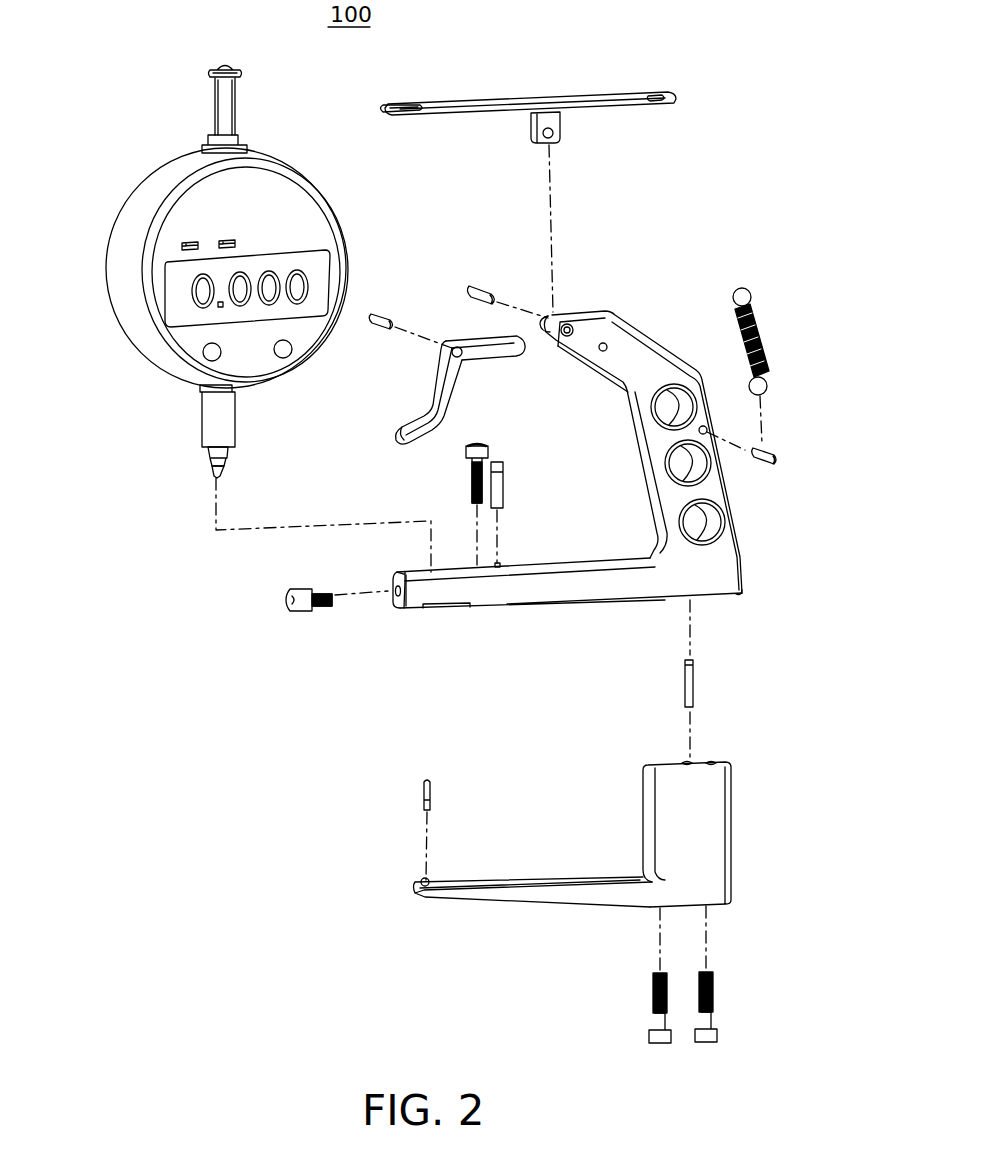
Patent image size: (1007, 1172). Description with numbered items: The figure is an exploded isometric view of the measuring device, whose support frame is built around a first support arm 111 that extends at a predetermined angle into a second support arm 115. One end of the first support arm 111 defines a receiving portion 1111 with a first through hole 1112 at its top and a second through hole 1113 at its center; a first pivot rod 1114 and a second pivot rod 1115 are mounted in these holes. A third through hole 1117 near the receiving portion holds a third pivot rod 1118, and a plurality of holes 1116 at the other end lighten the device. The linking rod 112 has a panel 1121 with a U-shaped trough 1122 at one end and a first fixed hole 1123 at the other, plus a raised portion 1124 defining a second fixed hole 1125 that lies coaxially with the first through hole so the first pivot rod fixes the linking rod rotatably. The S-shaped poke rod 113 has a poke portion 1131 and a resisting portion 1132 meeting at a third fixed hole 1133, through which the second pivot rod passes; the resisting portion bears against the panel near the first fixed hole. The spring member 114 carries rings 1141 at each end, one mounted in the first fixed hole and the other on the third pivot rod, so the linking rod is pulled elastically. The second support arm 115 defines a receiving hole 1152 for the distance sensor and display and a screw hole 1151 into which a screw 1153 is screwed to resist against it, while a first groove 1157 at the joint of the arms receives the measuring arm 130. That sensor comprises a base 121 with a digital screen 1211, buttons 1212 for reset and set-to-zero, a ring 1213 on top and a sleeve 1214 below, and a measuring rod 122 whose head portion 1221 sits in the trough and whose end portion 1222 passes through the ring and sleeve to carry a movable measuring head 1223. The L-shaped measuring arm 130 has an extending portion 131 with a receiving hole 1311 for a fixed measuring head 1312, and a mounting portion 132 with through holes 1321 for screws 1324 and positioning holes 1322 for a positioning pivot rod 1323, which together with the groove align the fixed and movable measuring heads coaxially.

The base 121 is at (140, 202).
The digital screen 1211 is at (172, 304).
The buttons 1212 is at (206, 358).
The ring 1213 is at (208, 140).
The measuring rod 122 is at (220, 106).
The head portion 1221 is at (222, 70).
The sleeve 1214 is at (212, 415).
The end portion 1222 is at (210, 455).
The movable measuring head 1223 is at (216, 478).
The linking rod 112 is at (542, 167).
The panel 1121 is at (522, 100).
The U-shaped trough 1122 is at (400, 104).
The first fixed hole 1123 is at (655, 92).
The raised portion 1124 is at (556, 125).
The second fixed hole 1125 is at (553, 140).
The first support arm 111 is at (654, 420).
The receiving portion 1111 is at (548, 312).
The first through hole 1112 is at (578, 314).
The second through hole 1113 is at (608, 343).
The first pivot rod 1114 is at (470, 288).
The second pivot rod 1115 is at (378, 326).
The holes 1116 is at (704, 520).
The third through hole 1117 is at (690, 442).
The third pivot rod 1118 is at (778, 456).
The poke rod 113 is at (453, 372).
The poke portion 1131 is at (446, 395).
The resisting portion 1132 is at (502, 342).
The third fixed hole 1133 is at (464, 358).
The spring member 114 is at (785, 352).
The rings 1141 is at (746, 290).
The second support arm 115 is at (552, 627).
The screw hole 1151 is at (393, 605).
The receiving hole 1152 is at (438, 612).
The screw 1153 is at (292, 603).
The first groove 1157 is at (735, 600).
The measuring arm 130 is at (568, 885).
The extending portion 131 is at (472, 892).
The receiving hole 1311 is at (422, 880).
The fixed measuring head 1312 is at (422, 790).
The mounting portion 132 is at (712, 815).
The through holes 1321 is at (714, 762).
The positioning holes 1322 is at (686, 762).
The positioning pivot rod 1323 is at (696, 690).
The screws 1324 is at (712, 982).